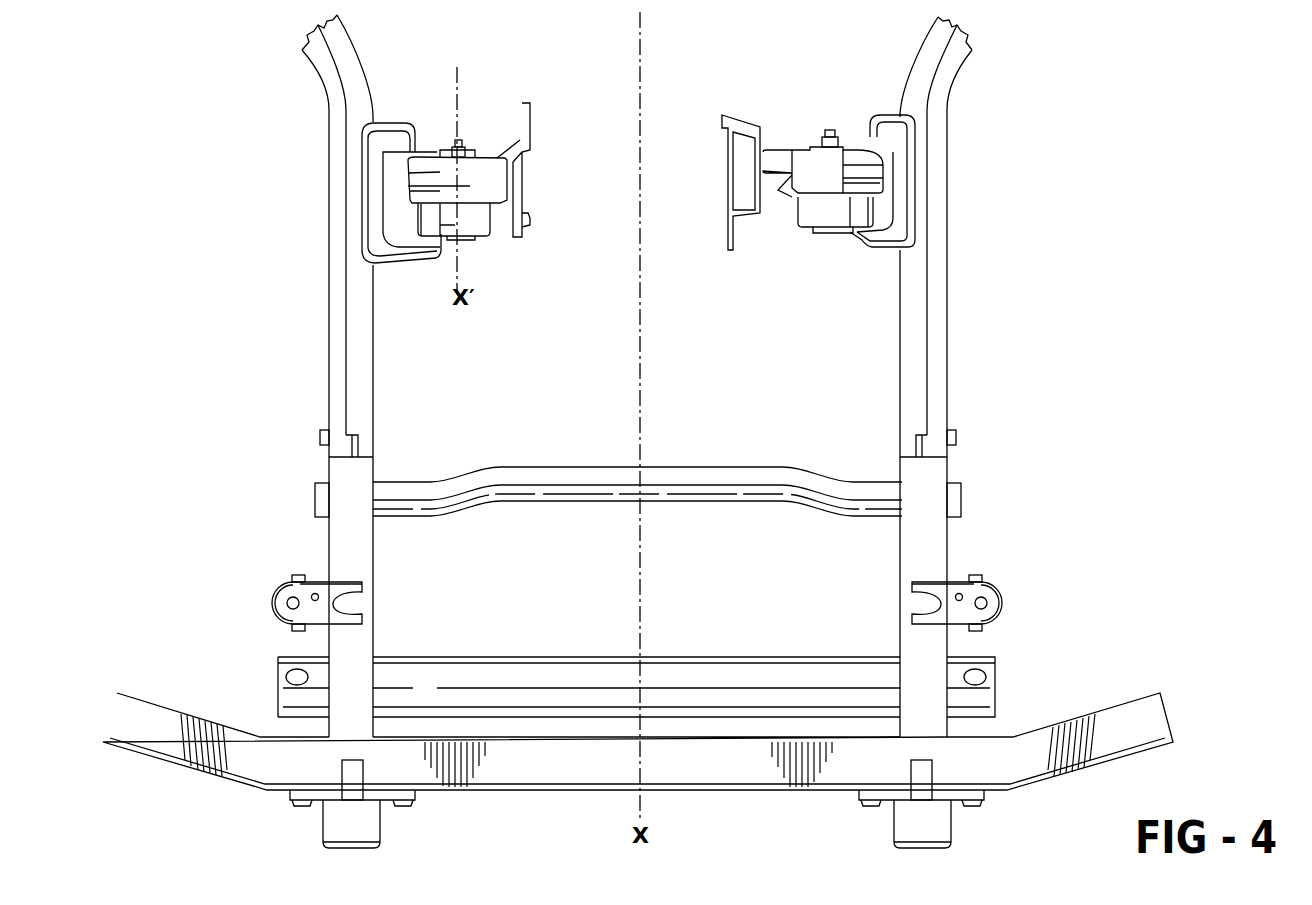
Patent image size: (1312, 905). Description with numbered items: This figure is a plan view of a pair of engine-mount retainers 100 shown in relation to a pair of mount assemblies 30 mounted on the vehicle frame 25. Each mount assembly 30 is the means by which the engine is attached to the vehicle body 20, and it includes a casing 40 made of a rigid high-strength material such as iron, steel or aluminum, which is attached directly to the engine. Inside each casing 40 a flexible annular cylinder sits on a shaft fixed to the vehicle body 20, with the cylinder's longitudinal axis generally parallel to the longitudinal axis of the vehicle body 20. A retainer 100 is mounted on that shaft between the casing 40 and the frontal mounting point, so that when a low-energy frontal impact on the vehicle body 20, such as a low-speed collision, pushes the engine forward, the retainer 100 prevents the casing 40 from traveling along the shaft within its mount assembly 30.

The vehicle body 20 is at (393, 219).
The vehicle frame 25 is at (328, 106).
The mount assembly 30 is at (501, 233).
The casing 40 is at (493, 163).
The retainer 100 is at (443, 225).